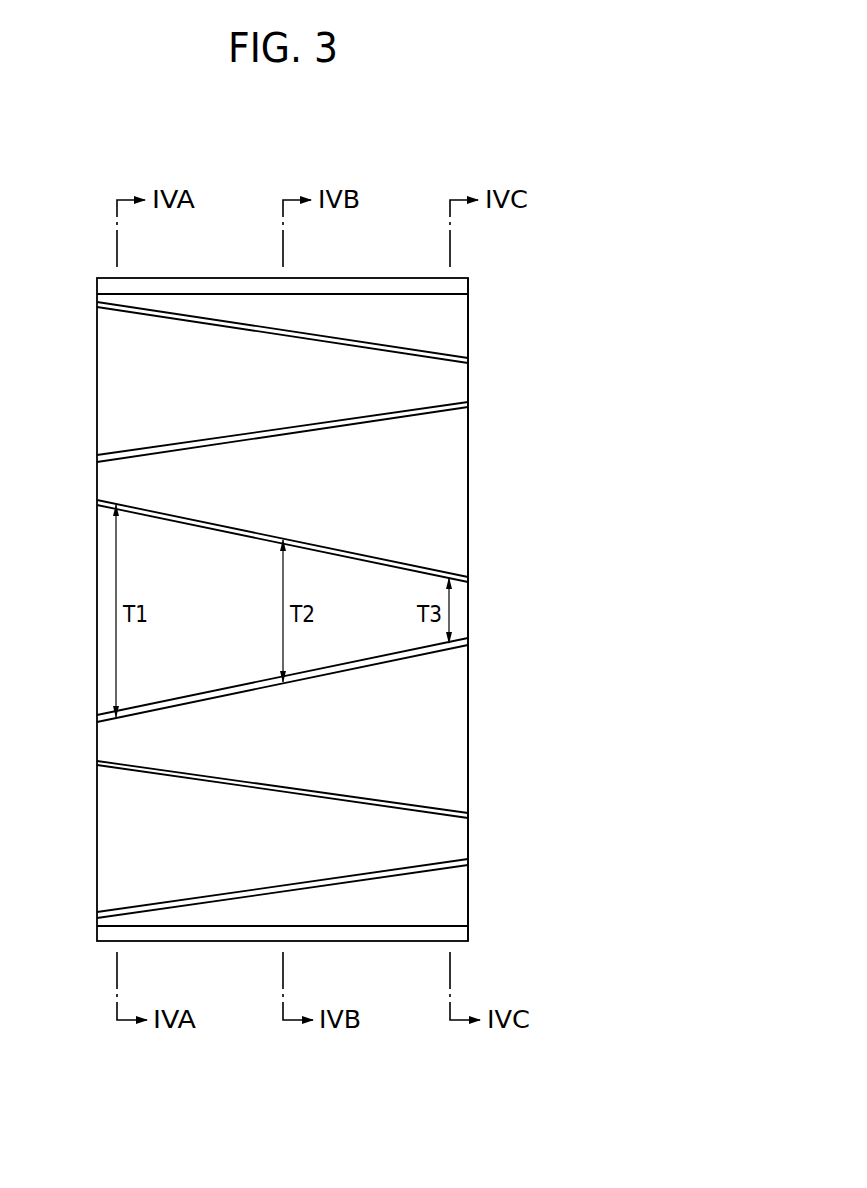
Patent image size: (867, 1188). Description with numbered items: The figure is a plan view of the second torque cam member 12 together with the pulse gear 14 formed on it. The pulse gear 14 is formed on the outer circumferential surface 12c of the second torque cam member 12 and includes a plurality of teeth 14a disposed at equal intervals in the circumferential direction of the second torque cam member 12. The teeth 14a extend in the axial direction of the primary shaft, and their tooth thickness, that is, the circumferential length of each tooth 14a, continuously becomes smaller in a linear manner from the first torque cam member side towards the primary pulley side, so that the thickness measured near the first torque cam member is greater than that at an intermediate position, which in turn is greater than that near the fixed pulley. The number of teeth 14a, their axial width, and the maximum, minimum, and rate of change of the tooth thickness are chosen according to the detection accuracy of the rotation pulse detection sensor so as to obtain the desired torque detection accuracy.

The second torque cam member 12 is at (97, 305).
The outer circumferential surface 12c is at (445, 514).
The pulse gear 14 is at (282, 612).
The teeth 14a is at (458, 289).